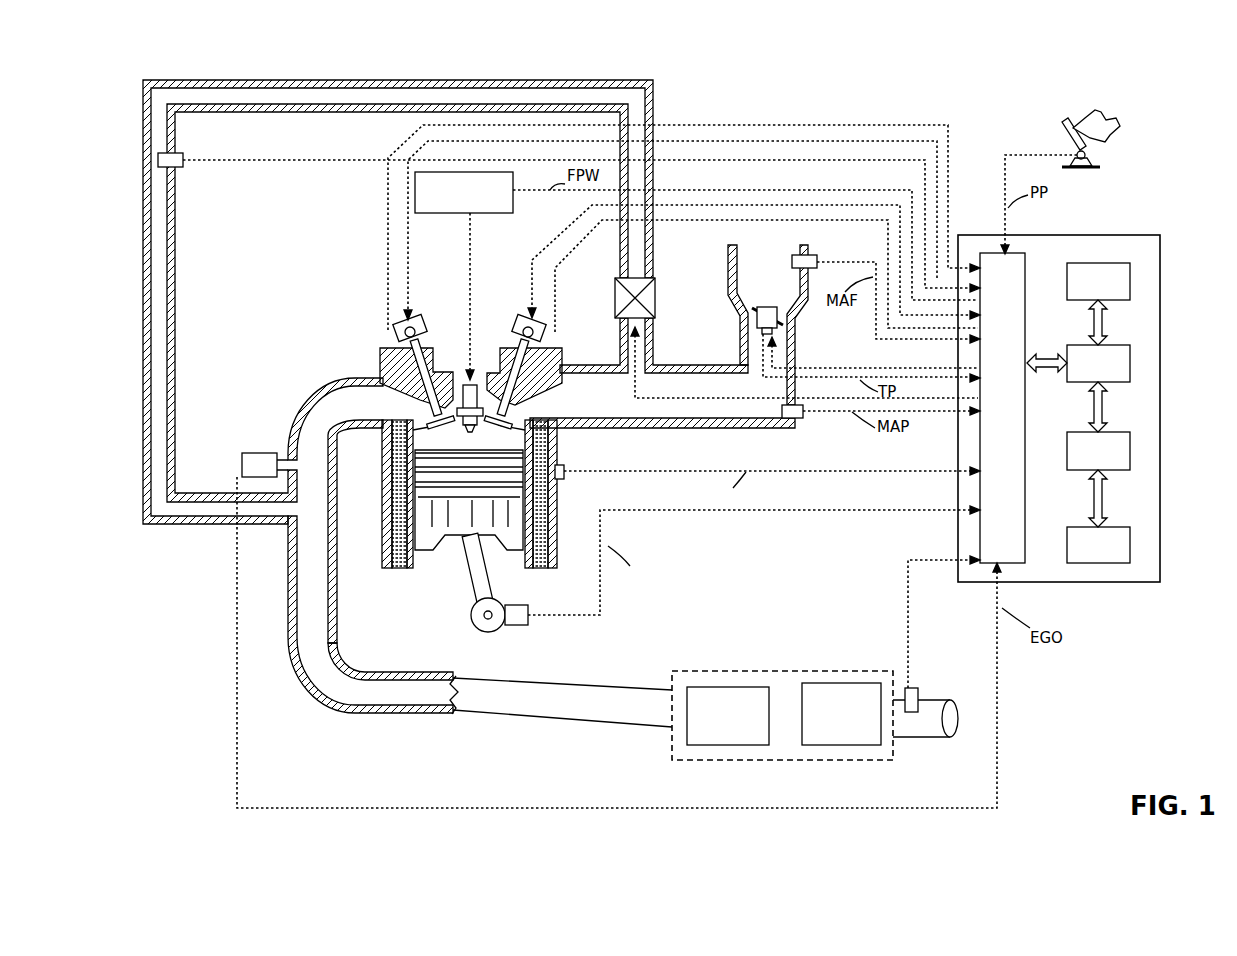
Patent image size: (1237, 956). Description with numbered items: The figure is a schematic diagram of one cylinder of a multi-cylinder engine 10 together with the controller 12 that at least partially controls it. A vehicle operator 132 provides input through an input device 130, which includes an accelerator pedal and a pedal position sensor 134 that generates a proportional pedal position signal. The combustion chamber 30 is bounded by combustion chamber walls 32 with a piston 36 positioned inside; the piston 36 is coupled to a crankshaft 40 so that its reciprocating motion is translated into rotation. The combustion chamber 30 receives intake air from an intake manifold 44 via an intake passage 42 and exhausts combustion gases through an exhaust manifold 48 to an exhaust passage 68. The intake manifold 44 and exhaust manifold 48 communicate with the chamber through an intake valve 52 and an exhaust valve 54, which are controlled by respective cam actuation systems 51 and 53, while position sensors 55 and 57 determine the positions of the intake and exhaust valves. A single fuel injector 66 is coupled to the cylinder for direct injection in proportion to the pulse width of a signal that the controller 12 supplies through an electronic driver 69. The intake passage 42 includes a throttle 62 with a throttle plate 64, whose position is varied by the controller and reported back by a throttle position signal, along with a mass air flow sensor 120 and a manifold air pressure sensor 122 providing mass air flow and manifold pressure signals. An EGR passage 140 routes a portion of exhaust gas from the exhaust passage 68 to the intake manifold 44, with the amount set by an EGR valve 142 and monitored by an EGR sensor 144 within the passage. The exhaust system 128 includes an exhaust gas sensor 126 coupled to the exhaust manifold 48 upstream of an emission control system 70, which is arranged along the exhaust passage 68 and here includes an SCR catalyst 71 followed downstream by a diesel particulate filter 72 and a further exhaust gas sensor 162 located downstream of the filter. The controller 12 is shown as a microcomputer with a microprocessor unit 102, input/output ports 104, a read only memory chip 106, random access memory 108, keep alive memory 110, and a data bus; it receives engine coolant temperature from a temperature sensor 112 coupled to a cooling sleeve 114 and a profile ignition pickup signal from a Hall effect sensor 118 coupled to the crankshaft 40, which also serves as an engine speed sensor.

The engine 10 is at (325, 309).
The controller 12 is at (1093, 396).
The combustion chamber 30 is at (447, 440).
The combustion chamber walls 32 is at (413, 570).
The piston 36 is at (455, 527).
The crankshaft 40 is at (478, 631).
The intake passage 42 is at (768, 325).
The intake manifold 44 is at (662, 412).
The exhaust manifold 48 is at (335, 510).
The cam actuation system 51 is at (522, 322).
The intake valve 52 is at (506, 412).
The cam actuation system 53 is at (414, 322).
The exhaust valve 54 is at (425, 412).
The position sensor 55 is at (548, 336).
The position sensor 57 is at (398, 334).
The throttle 62 is at (786, 318).
The throttle plate 64 is at (755, 316).
The fuel injector 66 is at (472, 378).
The exhaust passage 68 is at (486, 722).
The electronic driver 69 is at (696, 236).
The emission control system 70 is at (815, 735).
The SCR catalyst 71 is at (728, 716).
The diesel particulate filter 72 is at (841, 714).
The microprocessor unit 102 is at (1130, 362).
The input/output ports 104 is at (1028, 262).
The read only memory chip 106 is at (1130, 278).
The random access memory 108 is at (1130, 450).
The keep alive memory 110 is at (1130, 545).
The temperature sensor 112 is at (566, 470).
The cooling sleeve 114 is at (545, 525).
The Hall effect sensor 118 is at (526, 626).
The mass air flow sensor 120 is at (812, 256).
The manifold air pressure sensor 122 is at (798, 418).
The exhaust gas sensor 126 is at (243, 458).
The exhaust system 128 is at (322, 705).
The input device 130 is at (1107, 173).
The vehicle operator 132 is at (1112, 122).
The pedal position sensor 134 is at (1098, 162).
The EGR passage 140 is at (395, 82).
The EGR valve 142 is at (656, 300).
The EGR sensor 144 is at (178, 167).
The exhaust gas sensor 162 is at (912, 690).